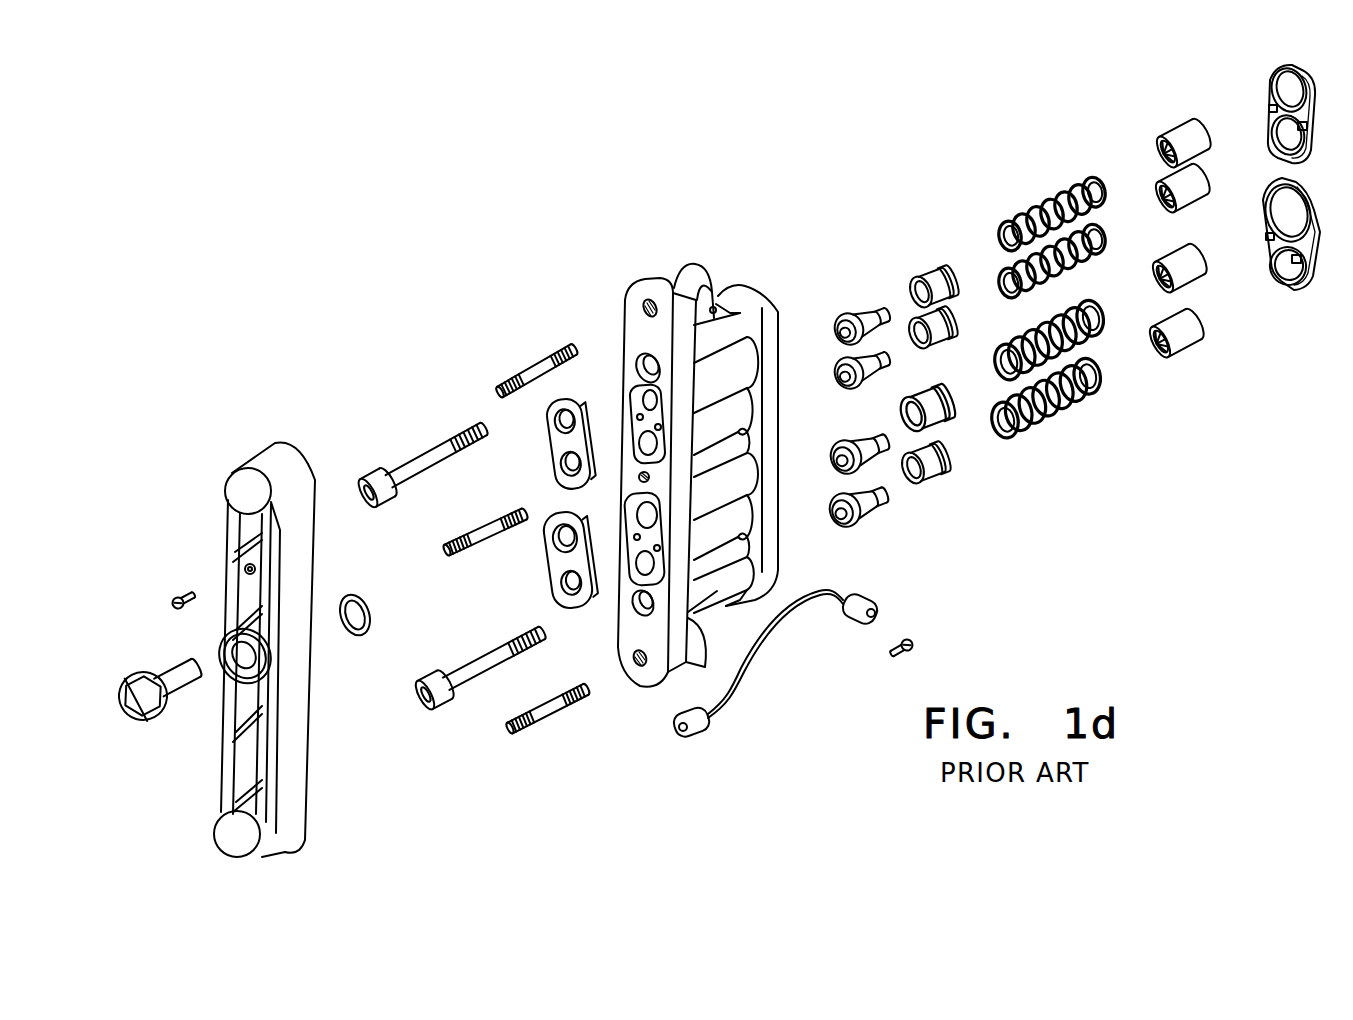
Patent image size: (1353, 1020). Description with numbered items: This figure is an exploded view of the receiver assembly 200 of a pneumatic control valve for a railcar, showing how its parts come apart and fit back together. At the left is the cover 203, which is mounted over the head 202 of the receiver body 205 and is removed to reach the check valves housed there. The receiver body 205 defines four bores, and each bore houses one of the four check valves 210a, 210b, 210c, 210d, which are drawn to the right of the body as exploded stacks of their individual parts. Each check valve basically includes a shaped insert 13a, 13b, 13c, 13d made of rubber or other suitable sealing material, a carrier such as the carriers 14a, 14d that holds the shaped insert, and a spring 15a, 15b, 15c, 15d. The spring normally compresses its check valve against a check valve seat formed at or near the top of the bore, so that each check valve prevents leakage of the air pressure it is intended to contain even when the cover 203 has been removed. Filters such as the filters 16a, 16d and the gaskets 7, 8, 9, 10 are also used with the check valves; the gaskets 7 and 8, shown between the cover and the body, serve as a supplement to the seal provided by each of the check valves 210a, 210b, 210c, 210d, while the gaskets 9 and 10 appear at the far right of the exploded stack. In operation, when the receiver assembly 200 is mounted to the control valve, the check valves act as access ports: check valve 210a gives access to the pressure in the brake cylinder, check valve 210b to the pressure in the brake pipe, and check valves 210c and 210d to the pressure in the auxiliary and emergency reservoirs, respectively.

The receiver assembly 200 is at (829, 190).
The head 202 is at (640, 328).
The cover 203 is at (272, 456).
The receiver body 205 is at (657, 280).
The gasket 7 is at (550, 442).
The gasket 8 is at (557, 566).
The gasket 9 is at (1313, 132).
The gasket 10 is at (1300, 288).
The shaped insert 13a is at (835, 514).
The shaped insert 13b is at (840, 460).
The shaped insert 13c is at (838, 381).
The shaped insert 13d is at (845, 338).
The carrier 14a is at (946, 461).
The carrier 14d is at (951, 286).
The spring 15a is at (1070, 395).
The spring 15b is at (1071, 336).
The spring 15c is at (1074, 256).
The spring 15d is at (1075, 208).
The filter 16a is at (1185, 335).
The filter 16d is at (1190, 132).
The check valve 210a is at (842, 533).
The check valve 210b is at (825, 437).
The check valve 210c is at (1112, 233).
The check valve 210d is at (832, 315).